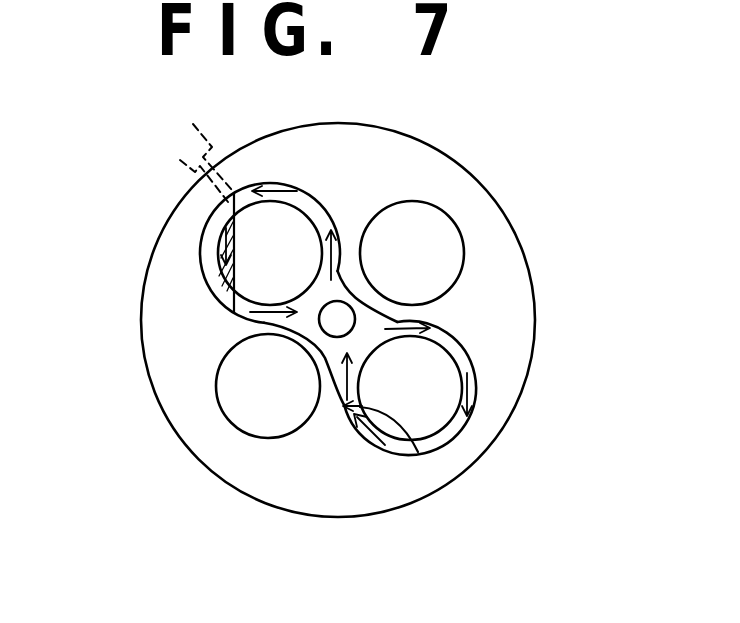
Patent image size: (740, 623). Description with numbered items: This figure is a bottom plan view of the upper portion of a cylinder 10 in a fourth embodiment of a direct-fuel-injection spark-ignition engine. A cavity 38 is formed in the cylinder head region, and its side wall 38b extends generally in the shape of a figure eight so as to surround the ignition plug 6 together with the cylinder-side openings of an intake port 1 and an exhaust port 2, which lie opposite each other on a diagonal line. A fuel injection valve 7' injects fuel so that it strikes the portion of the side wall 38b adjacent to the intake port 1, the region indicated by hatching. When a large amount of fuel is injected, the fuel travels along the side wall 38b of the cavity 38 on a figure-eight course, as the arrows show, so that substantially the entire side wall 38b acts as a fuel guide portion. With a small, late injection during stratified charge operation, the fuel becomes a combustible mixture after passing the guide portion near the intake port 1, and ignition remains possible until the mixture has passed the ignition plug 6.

The intake port 1 is at (293, 237).
The exhaust port 2 is at (437, 237).
The ignition plug 6 is at (325, 338).
The cylinder 10 is at (534, 346).
The cavity 38 is at (453, 340).
The side wall of the cavity 38b is at (418, 452).
The fuel injection valve 7' is at (155, 174).